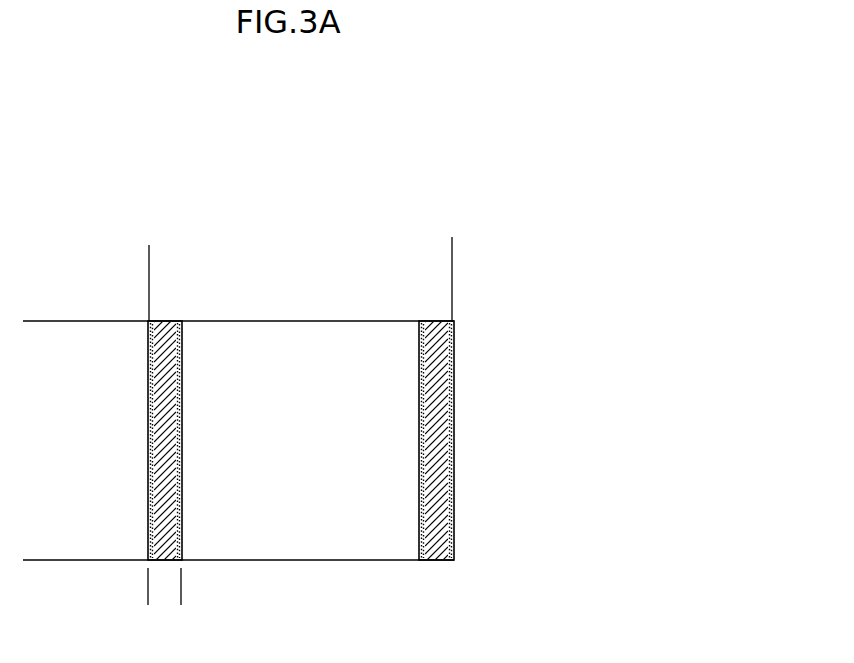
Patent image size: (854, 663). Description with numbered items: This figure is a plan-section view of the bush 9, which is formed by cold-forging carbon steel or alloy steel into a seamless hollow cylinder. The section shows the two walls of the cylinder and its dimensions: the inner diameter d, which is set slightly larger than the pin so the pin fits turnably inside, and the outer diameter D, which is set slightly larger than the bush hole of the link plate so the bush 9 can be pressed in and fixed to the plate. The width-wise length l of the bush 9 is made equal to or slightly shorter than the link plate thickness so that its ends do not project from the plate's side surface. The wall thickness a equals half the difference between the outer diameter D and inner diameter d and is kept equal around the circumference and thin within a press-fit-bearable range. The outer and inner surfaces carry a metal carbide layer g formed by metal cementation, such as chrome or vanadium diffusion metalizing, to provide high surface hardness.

The bush 9 is at (450, 186).
The outer diameter D is at (452, 262).
The inner diameter d is at (419, 419).
The width-wise length l is at (72, 321).
The metal carbide layer g is at (147, 373).
The thickness a is at (148, 588).